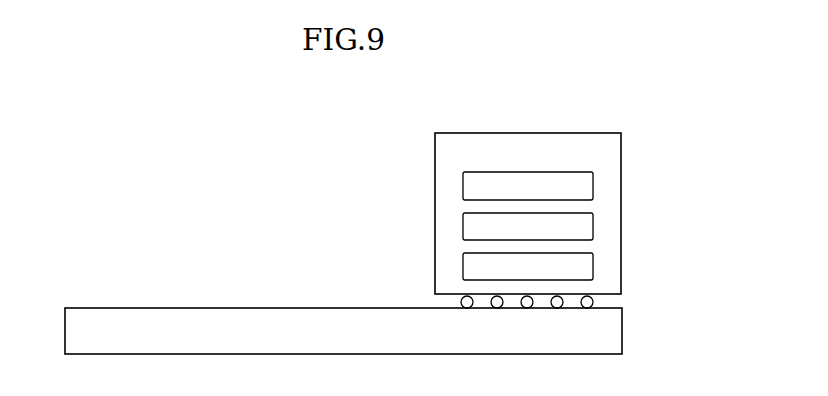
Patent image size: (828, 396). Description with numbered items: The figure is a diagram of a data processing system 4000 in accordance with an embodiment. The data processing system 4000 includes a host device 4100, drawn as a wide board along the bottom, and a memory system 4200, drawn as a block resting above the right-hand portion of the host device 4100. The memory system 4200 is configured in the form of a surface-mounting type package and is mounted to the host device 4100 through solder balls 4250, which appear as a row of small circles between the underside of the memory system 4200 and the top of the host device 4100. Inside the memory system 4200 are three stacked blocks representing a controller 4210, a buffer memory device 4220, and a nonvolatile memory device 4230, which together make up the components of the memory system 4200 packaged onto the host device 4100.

The data processing system 4000 is at (140, 107).
The host device 4100 is at (343, 331).
The memory system 4200 is at (528, 213).
The controller 4210 is at (528, 186).
The buffer memory device 4220 is at (528, 226).
The nonvolatile memory device 4230 is at (528, 266).
The solder balls 4250 is at (603, 302).